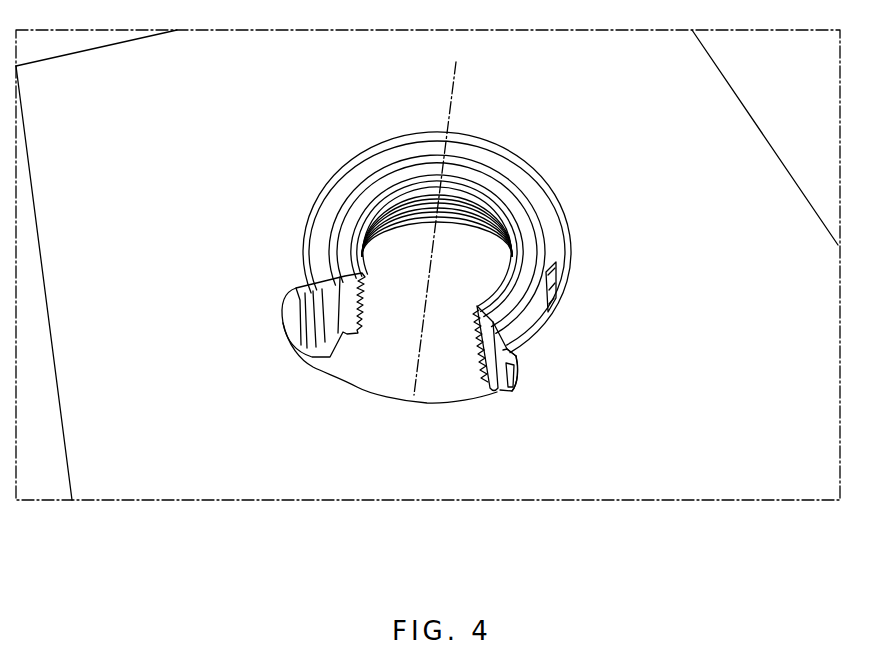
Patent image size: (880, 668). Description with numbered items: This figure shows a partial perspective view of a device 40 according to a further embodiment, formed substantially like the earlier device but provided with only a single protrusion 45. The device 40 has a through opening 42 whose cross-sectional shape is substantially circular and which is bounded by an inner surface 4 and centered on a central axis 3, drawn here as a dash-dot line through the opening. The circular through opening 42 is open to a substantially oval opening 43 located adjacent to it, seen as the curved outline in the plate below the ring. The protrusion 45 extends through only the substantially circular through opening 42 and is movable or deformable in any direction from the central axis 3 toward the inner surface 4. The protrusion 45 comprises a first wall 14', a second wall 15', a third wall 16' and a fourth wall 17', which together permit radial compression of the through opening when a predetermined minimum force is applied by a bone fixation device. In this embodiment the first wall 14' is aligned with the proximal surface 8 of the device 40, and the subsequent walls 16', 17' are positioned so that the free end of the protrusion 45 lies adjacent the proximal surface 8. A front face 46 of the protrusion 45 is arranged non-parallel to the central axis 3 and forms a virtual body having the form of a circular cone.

The central axis 3 is at (455, 100).
The inner surface 4 is at (330, 205).
The proximal surface 8 is at (685, 75).
The device 40 is at (198, 172).
The through opening 42 is at (486, 254).
The substantially oval opening 43 is at (467, 392).
The protrusion 45 is at (410, 168).
The front face 46 is at (390, 222).
The first wall 14' is at (549, 350).
The second wall 15' is at (559, 421).
The third wall 16' is at (462, 358).
The fourth wall 17' is at (463, 311).